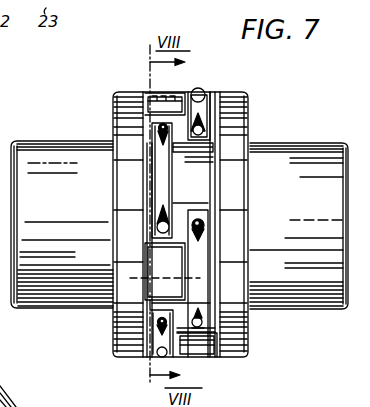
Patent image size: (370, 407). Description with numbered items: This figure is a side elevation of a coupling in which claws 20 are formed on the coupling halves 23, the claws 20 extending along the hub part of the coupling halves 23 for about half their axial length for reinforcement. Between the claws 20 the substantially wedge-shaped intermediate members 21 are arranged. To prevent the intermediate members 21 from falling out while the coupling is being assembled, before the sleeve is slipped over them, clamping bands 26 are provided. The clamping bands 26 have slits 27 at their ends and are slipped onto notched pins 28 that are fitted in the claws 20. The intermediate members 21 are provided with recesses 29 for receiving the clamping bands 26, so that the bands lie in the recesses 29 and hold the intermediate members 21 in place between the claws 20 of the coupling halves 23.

The claws 20 is at (114, 345).
The intermediate members 21 is at (111, 260).
The coupling halves 23 is at (49, 314).
The clamping bands 26 is at (152, 148).
The slits 27 is at (162, 230).
The notched pins 28 is at (207, 224).
The recesses 29 is at (200, 148).